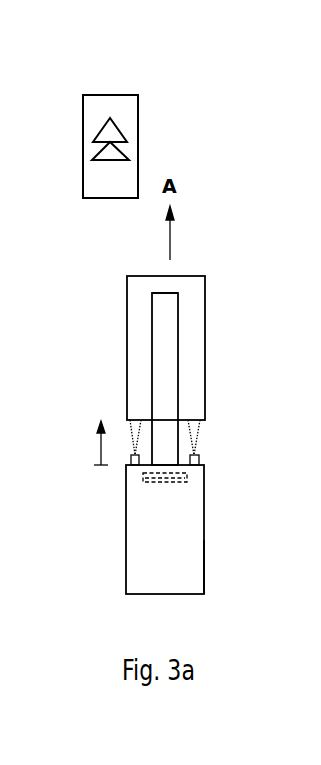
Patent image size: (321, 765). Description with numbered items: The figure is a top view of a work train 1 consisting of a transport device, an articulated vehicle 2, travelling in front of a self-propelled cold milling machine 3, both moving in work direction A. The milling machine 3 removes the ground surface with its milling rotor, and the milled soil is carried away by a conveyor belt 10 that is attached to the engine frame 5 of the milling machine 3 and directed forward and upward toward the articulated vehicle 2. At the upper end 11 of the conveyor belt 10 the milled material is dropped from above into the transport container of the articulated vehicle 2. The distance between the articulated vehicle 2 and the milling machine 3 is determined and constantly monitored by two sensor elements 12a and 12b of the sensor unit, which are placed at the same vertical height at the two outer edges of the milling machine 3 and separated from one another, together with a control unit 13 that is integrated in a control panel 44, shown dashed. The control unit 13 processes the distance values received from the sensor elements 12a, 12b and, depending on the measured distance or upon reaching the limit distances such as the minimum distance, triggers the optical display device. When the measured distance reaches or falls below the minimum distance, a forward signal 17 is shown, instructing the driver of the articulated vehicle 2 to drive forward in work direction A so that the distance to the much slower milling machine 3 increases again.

The work train 1 is at (221, 384).
The articulated vehicle 2 is at (215, 258).
The milling machine 3 is at (217, 537).
The engine frame 5 is at (205, 563).
The conveyor belt 10 is at (167, 335).
The upper end of the conveyor belt 11 is at (163, 292).
The sensor element 12a is at (138, 457).
The sensor element 12b is at (197, 459).
The control unit 13 is at (145, 477).
The forward signal 17 is at (120, 112).
The control panel 44 is at (178, 480).